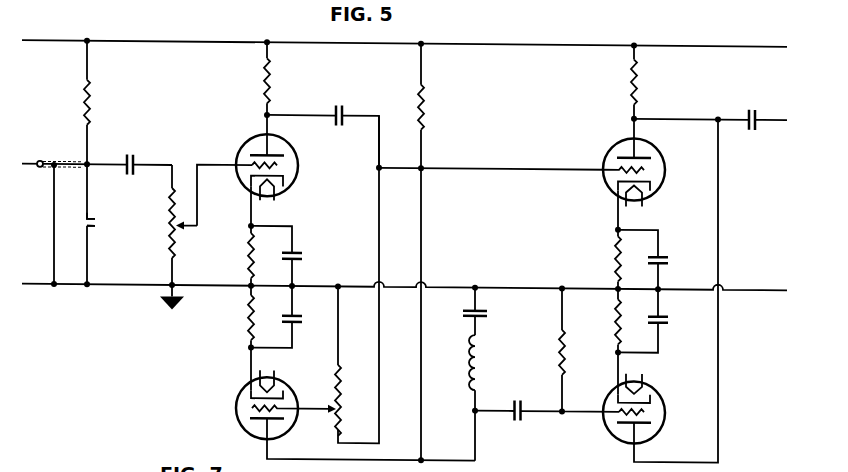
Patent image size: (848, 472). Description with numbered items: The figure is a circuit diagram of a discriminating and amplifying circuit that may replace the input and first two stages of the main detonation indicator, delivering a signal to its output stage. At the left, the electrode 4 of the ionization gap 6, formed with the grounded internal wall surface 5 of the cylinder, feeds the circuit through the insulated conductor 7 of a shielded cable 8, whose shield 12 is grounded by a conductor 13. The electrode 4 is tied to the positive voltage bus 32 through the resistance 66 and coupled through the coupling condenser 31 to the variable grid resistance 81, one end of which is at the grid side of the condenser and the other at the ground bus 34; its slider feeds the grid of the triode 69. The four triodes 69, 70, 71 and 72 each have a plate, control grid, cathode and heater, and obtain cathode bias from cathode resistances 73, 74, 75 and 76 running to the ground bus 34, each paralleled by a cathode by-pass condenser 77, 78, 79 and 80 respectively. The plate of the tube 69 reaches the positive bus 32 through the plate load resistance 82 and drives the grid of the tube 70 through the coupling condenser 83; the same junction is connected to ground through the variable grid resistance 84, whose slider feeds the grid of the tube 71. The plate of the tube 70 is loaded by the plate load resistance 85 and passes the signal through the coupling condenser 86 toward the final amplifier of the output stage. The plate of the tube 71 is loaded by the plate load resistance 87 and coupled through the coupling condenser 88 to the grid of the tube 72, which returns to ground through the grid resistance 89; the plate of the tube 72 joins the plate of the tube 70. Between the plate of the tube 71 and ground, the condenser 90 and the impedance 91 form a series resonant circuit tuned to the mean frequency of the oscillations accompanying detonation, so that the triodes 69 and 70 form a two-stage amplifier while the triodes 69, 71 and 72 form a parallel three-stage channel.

The positive voltage bus 32 is at (204, 43).
The ground bus 34 is at (131, 288).
The insulated conductor 7 is at (33, 158).
The shielded cable 8 is at (61, 148).
The shield 12 is at (44, 169).
The conductor 13 is at (54, 228).
The electrode 4 is at (92, 219).
The internal wall surface 5 is at (96, 229).
The ionization gap 6 is at (97, 222).
The resistance 66 is at (94, 101).
The coupling condenser 31 is at (133, 154).
The variable grid resistance 81 is at (168, 222).
The triode vacuum tube 69 is at (298, 153).
The plate load resistance 82 is at (275, 81).
The coupling condenser 83 is at (339, 106).
The plate load resistance 87 is at (430, 108).
The cathode resistance 73 is at (248, 253).
The cathode by-pass condenser 77 is at (303, 257).
The cathode resistance 75 is at (247, 319).
The cathode by-pass condenser 79 is at (300, 320).
The triode vacuum tube 71 is at (289, 384).
The variable grid resistance 84 is at (344, 400).
The condenser 90 is at (463, 312).
The impedance 91 is at (479, 364).
The coupling condenser 88 is at (519, 422).
The grid resistance 89 is at (557, 340).
The plate load resistance 85 is at (643, 82).
The coupling condenser 86 is at (752, 103).
The triode vacuum tube 70 is at (665, 161).
The cathode resistance 74 is at (610, 258).
The cathode by-pass condenser 78 is at (670, 262).
The cathode resistance 76 is at (610, 325).
The cathode by-pass condenser 80 is at (670, 320).
The triode vacuum tube 72 is at (660, 386).